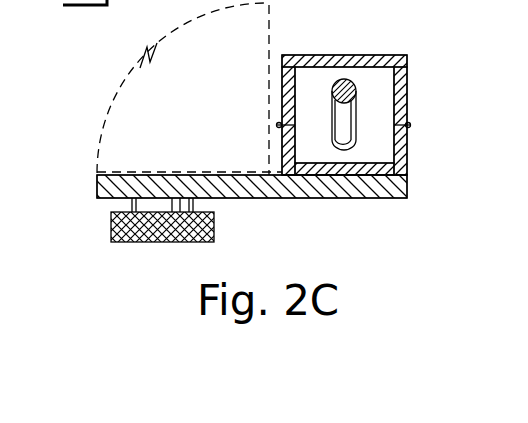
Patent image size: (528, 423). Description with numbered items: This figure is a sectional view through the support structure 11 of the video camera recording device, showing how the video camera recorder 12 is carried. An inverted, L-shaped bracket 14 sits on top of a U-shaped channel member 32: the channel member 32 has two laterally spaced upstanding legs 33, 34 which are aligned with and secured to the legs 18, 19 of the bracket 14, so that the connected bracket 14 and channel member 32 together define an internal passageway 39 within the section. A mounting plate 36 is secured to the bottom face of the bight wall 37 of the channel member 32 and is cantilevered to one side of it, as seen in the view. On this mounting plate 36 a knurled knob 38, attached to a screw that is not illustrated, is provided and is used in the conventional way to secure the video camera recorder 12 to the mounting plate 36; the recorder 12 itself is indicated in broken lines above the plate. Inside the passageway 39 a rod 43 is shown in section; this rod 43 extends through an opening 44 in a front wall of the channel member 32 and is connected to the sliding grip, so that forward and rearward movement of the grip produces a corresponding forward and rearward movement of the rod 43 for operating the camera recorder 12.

The support structure 11 is at (405, 204).
The video camera recorder 12 is at (272, 15).
The bracket 14 is at (407, 58).
The leg 18 is at (283, 84).
The leg 19 is at (408, 83).
The U-shaped channel member 32 is at (407, 160).
The upstanding leg 33 is at (290, 142).
The upstanding leg 34 is at (408, 139).
The mounting plate 36 is at (350, 198).
The bight wall 37 is at (340, 168).
The knurled knob 38 is at (214, 227).
The internal passageway 39 is at (367, 82).
The rod 43 is at (340, 130).
The opening 44 is at (360, 150).